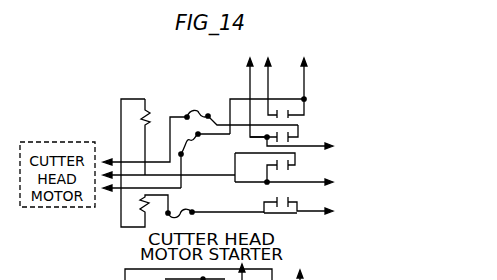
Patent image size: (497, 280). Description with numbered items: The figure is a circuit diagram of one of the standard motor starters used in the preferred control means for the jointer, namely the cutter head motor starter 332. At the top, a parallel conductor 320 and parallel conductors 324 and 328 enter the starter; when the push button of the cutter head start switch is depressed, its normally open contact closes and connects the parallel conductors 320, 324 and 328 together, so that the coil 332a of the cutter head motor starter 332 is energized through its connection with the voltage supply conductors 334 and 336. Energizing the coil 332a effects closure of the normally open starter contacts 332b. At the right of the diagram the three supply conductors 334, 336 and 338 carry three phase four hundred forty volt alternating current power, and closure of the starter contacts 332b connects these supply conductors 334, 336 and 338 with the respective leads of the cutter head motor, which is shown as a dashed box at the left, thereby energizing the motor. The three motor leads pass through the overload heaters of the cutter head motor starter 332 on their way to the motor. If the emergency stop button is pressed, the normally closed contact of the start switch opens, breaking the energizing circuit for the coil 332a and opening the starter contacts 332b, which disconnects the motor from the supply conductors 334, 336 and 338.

The parallel conductor 320 is at (307, 74).
The parallel conductor 324 is at (271, 63).
The parallel conductor 328 is at (247, 72).
The cutter head motor starter 332 is at (226, 231).
The coil 332a is at (184, 153).
The normally open starter contact 332b is at (292, 118).
The voltage supply conductor 334 is at (318, 139).
The voltage supply conductor 336 is at (313, 180).
The supply conductor 338 is at (310, 210).